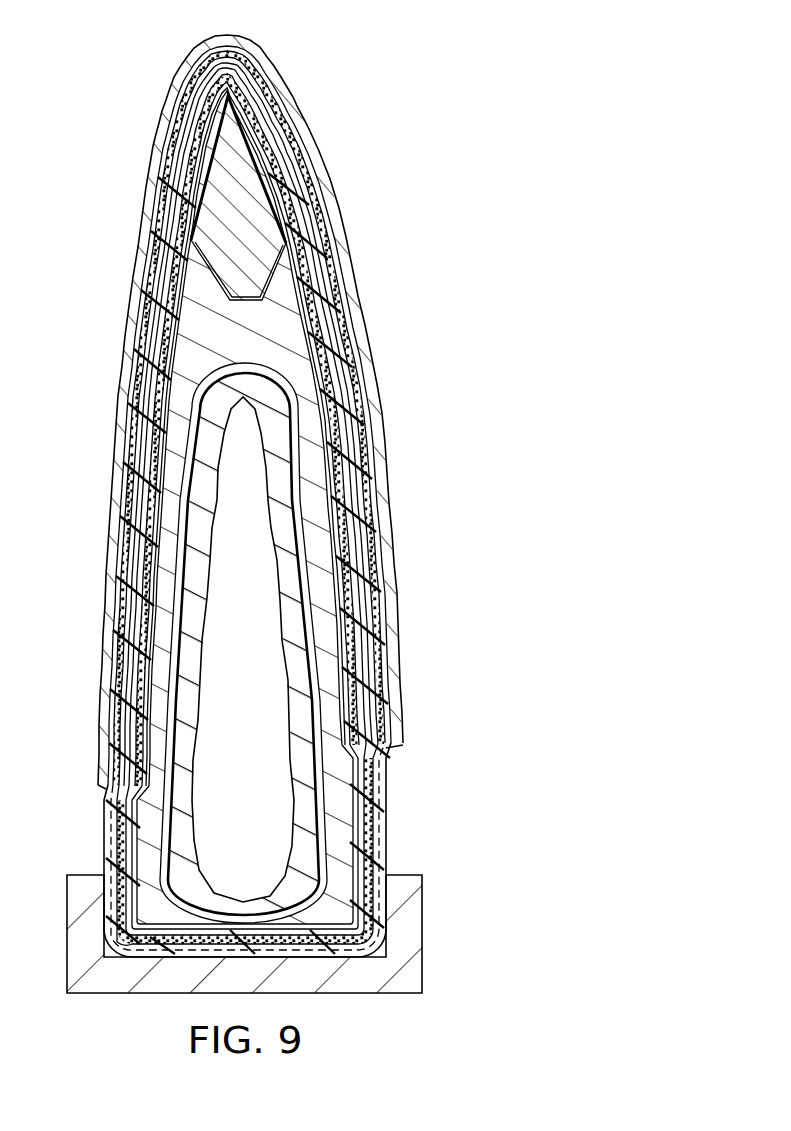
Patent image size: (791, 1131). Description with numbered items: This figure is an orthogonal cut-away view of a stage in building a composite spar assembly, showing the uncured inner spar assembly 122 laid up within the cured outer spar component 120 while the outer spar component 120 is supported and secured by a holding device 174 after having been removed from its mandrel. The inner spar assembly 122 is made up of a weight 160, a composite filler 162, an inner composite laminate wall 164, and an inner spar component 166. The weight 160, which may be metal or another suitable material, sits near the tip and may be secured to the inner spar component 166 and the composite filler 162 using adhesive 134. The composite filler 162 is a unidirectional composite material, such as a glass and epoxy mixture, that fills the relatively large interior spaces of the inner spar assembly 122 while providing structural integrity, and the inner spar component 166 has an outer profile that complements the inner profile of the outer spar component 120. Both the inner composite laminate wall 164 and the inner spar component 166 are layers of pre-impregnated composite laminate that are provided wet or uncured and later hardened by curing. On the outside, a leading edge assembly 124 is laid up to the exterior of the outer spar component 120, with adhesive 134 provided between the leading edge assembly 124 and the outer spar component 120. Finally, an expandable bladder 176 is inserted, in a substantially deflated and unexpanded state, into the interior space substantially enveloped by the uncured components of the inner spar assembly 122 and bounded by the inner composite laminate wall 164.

The outer spar component 120 is at (387, 827).
The inner spar assembly 122 is at (345, 393).
The leading edge assembly 124 is at (317, 113).
The adhesive 134 is at (286, 221).
The weight 160 is at (230, 153).
The composite filler 162 is at (168, 532).
The inner composite laminate wall 164 is at (327, 798).
The inner spar component 166 is at (162, 408).
The holding device 174 is at (102, 985).
The expandable bladder 176 is at (258, 905).